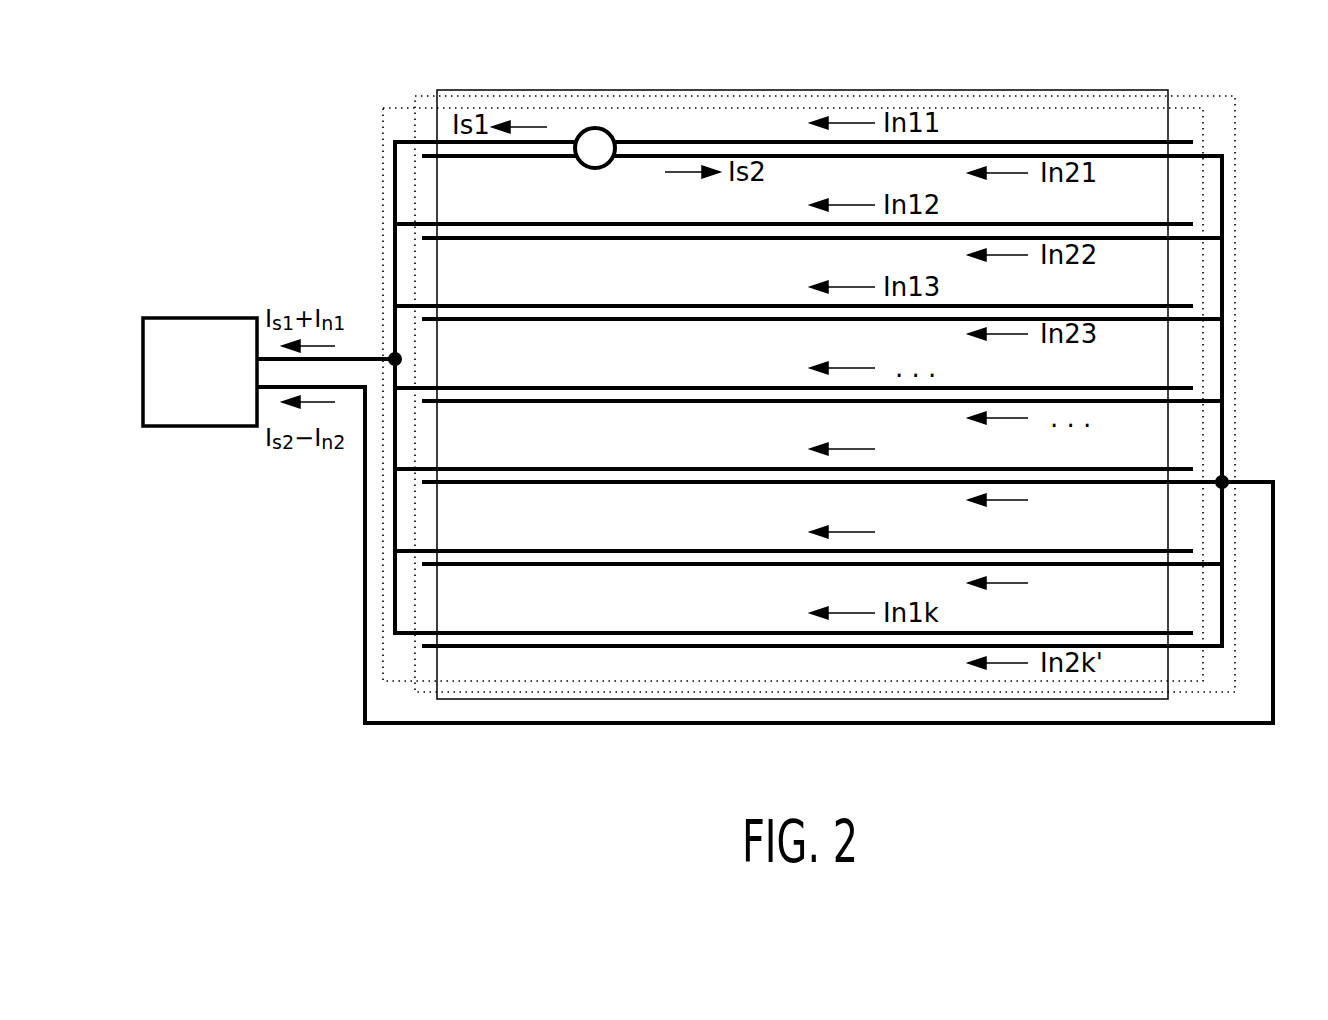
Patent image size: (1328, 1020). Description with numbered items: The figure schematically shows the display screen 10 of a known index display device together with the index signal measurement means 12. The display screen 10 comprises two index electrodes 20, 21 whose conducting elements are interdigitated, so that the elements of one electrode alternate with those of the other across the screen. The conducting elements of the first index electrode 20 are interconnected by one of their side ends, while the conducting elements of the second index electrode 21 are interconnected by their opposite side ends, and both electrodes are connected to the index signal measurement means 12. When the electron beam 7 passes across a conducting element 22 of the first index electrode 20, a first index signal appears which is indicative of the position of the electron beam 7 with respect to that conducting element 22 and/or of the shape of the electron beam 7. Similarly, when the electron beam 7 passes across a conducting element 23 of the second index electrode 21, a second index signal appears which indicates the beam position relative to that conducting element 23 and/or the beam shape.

The electron beam 7 is at (598, 143).
The display screen 10 is at (1015, 90).
The index signal measurement means 12 is at (200, 372).
The first index electrode 20 is at (382, 168).
The second index electrode 21 is at (1238, 129).
The conducting element of the first index electrode 22 is at (557, 140).
The conducting element of the second index electrode 23 is at (634, 158).